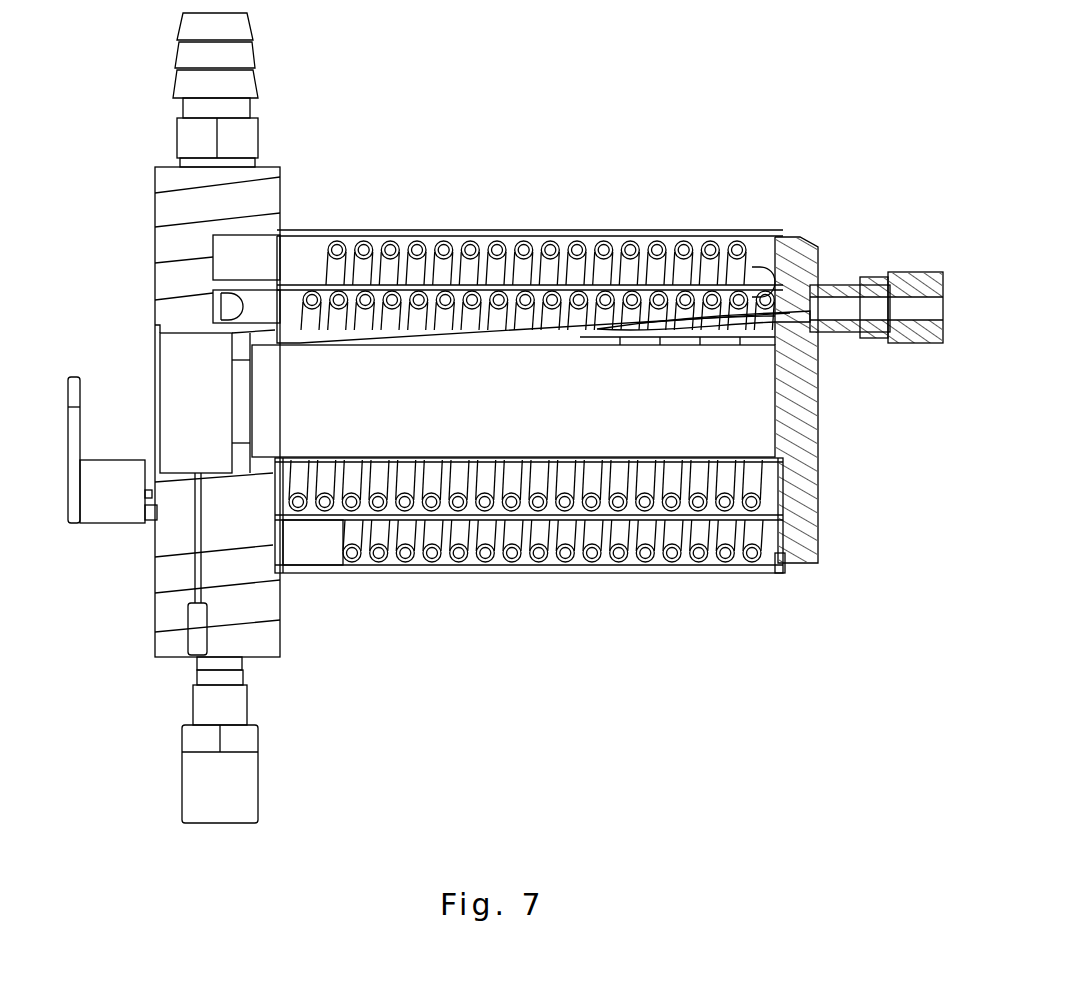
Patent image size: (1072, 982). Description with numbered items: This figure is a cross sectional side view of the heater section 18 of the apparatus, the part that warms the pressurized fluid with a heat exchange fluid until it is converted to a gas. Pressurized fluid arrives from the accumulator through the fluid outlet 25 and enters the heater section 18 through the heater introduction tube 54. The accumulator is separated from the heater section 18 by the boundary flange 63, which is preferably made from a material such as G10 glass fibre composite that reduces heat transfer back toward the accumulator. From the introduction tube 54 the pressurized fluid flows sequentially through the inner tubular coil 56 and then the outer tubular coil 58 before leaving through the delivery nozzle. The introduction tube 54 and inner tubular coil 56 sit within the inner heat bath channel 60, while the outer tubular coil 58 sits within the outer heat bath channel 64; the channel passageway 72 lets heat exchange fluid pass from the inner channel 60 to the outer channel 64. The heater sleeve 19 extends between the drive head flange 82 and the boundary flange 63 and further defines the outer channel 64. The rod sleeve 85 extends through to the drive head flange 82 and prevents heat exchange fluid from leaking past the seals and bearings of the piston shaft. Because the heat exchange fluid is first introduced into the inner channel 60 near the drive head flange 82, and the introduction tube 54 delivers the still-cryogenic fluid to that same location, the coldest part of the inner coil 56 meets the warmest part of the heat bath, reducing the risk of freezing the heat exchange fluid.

The heater section 18 is at (625, 687).
The heater sleeve 19 is at (500, 570).
The fluid outlet 25 is at (840, 300).
The heater introduction tube 54 is at (675, 345).
The inner tubular coil 56 is at (435, 280).
The outer tubular coil 58 is at (582, 565).
The inner heat bath channel 60 is at (290, 315).
The boundary flange 63 is at (808, 238).
The outer heat bath channel 64 is at (312, 533).
The channel passageway 72 is at (773, 555).
The drive head flange 82 is at (243, 608).
The rod sleeve 85 is at (735, 453).